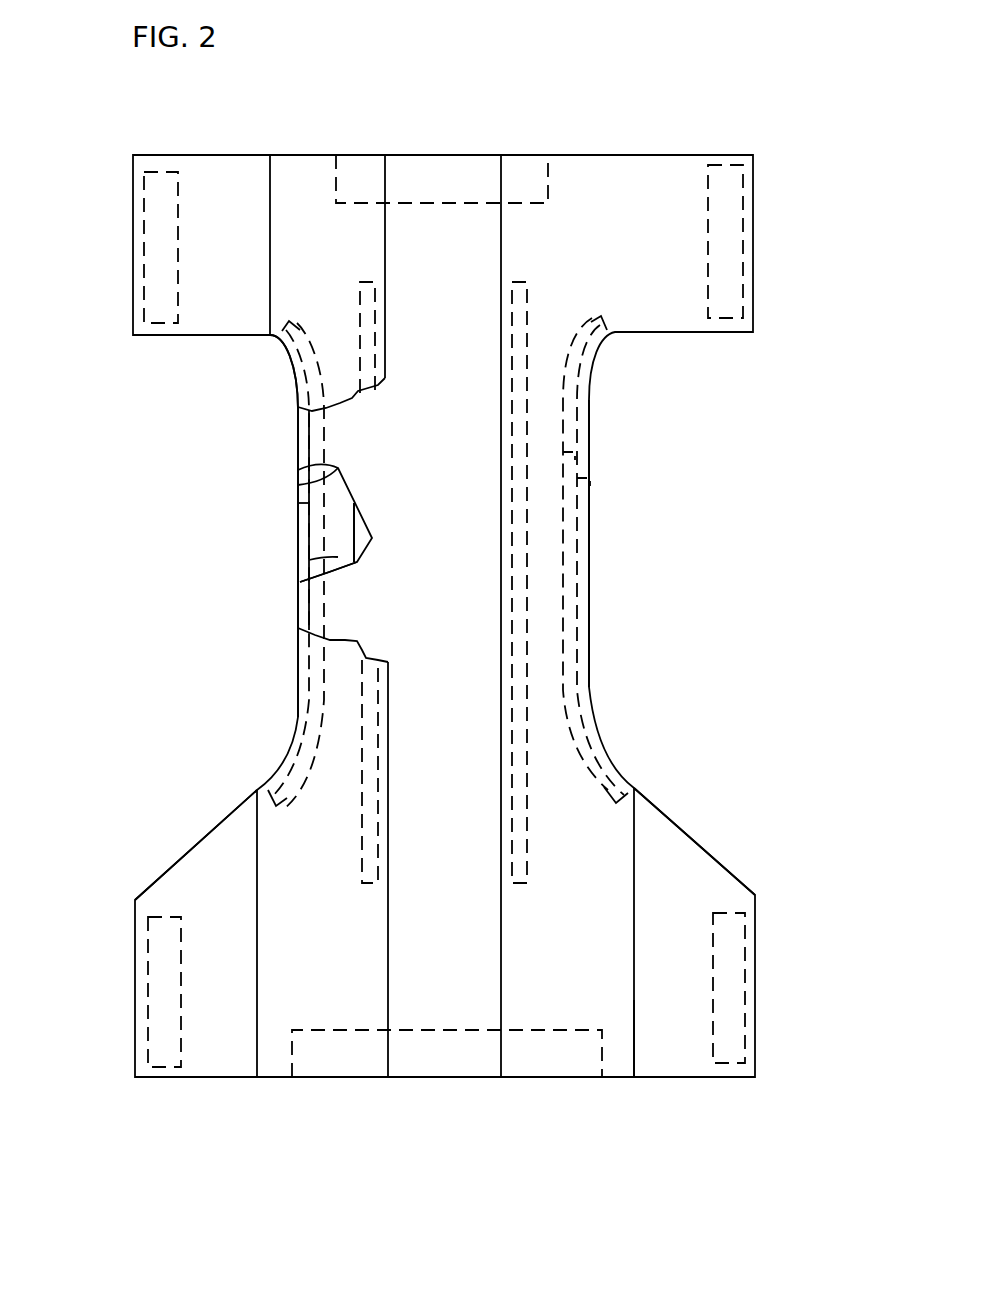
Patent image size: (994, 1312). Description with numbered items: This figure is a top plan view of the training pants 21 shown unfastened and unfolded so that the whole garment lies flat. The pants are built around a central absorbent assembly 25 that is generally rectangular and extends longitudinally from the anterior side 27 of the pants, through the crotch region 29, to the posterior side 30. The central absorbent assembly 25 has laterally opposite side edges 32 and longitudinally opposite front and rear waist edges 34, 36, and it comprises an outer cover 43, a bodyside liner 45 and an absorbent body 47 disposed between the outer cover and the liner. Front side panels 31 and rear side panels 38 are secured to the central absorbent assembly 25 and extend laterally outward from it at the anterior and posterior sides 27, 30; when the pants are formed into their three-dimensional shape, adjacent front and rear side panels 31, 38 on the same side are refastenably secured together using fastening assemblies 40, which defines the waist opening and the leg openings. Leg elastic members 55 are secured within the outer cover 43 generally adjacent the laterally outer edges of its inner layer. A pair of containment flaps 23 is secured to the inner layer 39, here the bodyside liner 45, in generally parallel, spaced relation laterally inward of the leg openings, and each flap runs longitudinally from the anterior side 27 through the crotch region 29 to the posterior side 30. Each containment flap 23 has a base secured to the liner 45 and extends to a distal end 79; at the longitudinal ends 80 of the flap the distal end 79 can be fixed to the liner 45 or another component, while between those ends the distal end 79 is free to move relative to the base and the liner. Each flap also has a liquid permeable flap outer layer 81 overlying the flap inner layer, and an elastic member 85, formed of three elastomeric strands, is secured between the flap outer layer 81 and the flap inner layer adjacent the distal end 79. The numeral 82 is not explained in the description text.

The training pants 21 is at (543, 108).
The containment flap 23 is at (323, 303).
The central absorbent assembly 25 is at (432, 985).
The anterior side 27 is at (292, 155).
The crotch region 29 is at (590, 632).
The posterior side 30 is at (602, 1003).
The front side panel 31 is at (200, 156).
The side edge 32 is at (300, 618).
The front waist edge 34 is at (402, 155).
The rear waist edge 36 is at (422, 1078).
The rear side panel 38 is at (217, 1048).
The inner layer 39 is at (433, 238).
The fastening assembly 40 is at (162, 238).
The outer cover 43 is at (298, 575).
The bodyside liner 45 is at (477, 1007).
The absorbent body 47 is at (353, 537).
The leg elastic member 55 is at (298, 483).
The distal end 79 is at (386, 325).
The longitudinal end 80 is at (320, 155).
The flap outer layer 81 is at (287, 295).
The leg edge 82 is at (618, 827).
The elastic member 85 is at (363, 693).